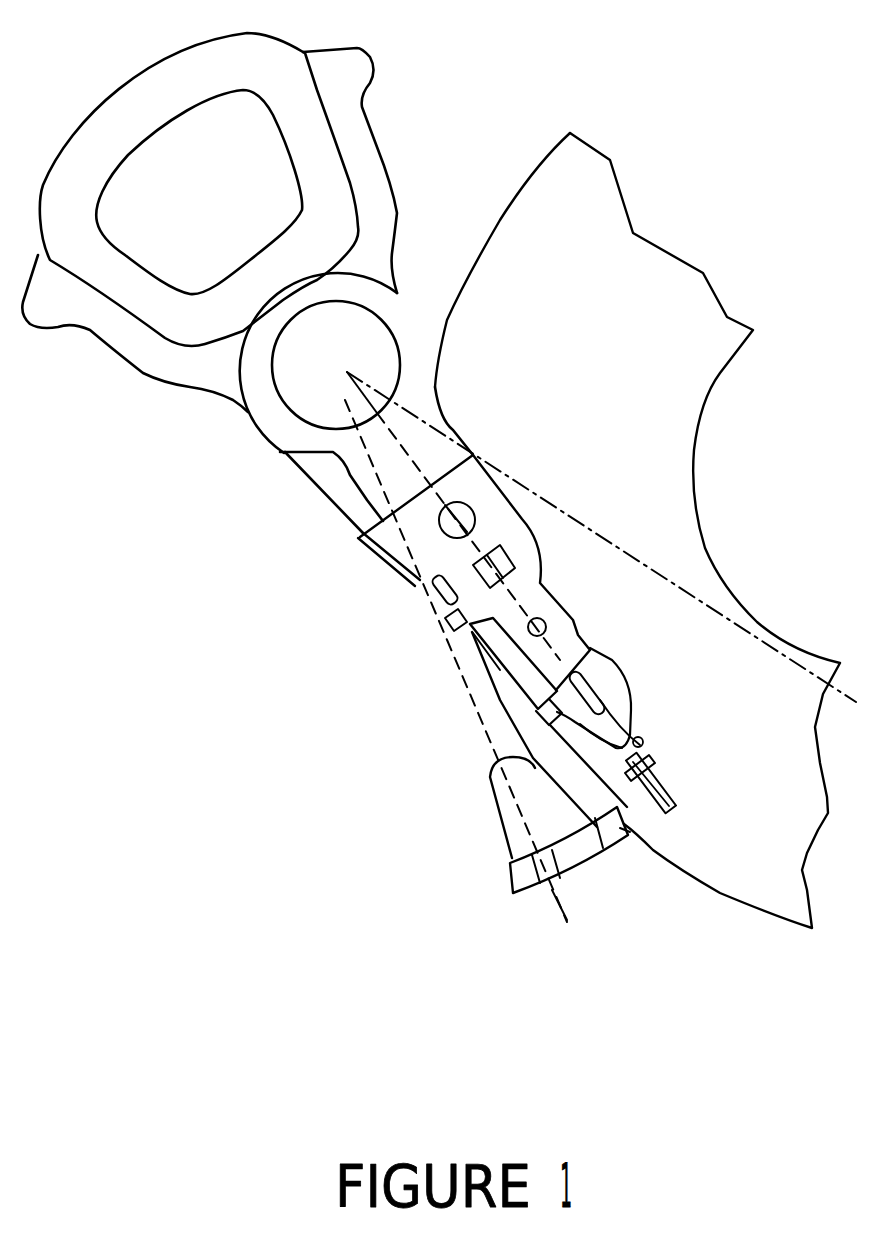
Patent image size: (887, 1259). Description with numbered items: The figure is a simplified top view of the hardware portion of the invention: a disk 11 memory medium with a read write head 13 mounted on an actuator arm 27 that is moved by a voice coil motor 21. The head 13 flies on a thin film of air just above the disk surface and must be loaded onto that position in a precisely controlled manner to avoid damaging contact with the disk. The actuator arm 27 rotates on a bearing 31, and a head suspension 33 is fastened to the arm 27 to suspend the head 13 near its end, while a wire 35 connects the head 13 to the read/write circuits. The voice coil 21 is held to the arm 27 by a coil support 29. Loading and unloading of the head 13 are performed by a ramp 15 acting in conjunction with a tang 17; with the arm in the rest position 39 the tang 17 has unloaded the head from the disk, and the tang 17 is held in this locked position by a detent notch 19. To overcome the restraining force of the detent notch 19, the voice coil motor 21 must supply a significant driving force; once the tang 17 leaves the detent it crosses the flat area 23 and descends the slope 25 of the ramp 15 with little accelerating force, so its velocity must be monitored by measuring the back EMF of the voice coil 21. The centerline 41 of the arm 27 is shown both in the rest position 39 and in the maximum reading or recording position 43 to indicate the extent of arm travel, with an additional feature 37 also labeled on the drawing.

The disk 11 is at (653, 273).
The read write head 13 is at (663, 721).
The ramp 15 is at (497, 828).
The tang 17 is at (670, 792).
The detent notch 19 is at (543, 883).
The voice coil motor 21 is at (130, 112).
The flat area 23 is at (577, 856).
The slope 25 is at (640, 828).
The actuator arm 27 is at (290, 453).
The coil support 29 is at (357, 72).
The bearing 31 is at (357, 327).
The head suspension 33 is at (535, 592).
The wire 35 is at (500, 670).
The foot 37 is at (520, 878).
The rest position 39 is at (557, 915).
The centerline 41 is at (425, 578).
The maximum reading or recording position 43 is at (693, 593).